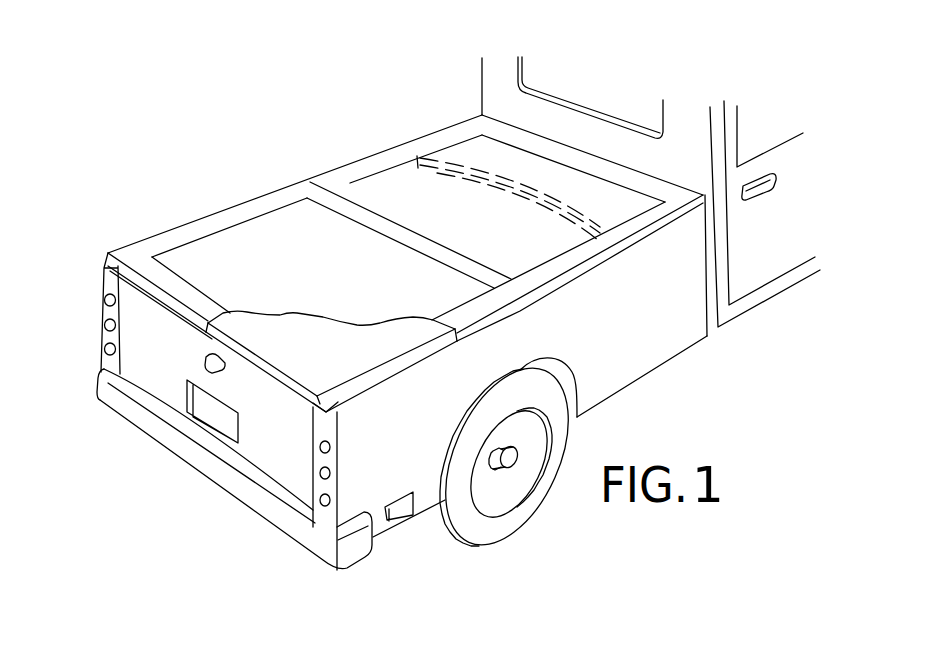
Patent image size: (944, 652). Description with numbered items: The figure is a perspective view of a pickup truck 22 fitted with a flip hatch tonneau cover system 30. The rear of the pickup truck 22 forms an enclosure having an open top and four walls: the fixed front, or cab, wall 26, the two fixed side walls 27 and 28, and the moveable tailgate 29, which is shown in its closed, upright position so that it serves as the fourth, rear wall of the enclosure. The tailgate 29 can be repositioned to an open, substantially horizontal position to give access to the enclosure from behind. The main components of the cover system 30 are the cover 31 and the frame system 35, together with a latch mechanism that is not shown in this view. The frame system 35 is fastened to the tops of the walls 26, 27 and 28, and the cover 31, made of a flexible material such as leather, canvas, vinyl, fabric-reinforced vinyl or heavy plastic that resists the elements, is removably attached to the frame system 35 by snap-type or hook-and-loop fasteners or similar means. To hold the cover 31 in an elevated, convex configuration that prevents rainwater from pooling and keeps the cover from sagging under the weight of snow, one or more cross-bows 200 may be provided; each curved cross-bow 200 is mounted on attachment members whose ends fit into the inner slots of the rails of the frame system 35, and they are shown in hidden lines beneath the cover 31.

The pickup truck 22 is at (615, 348).
The front wall 26 is at (492, 100).
The side wall 27 is at (291, 156).
The side wall 28 is at (656, 303).
The tailgate 29 is at (150, 367).
The flip hatch tonneau cover system 30 is at (147, 183).
The cover 31 is at (316, 251).
The frame system 35 is at (347, 343).
The cross-bow 200 is at (449, 154).